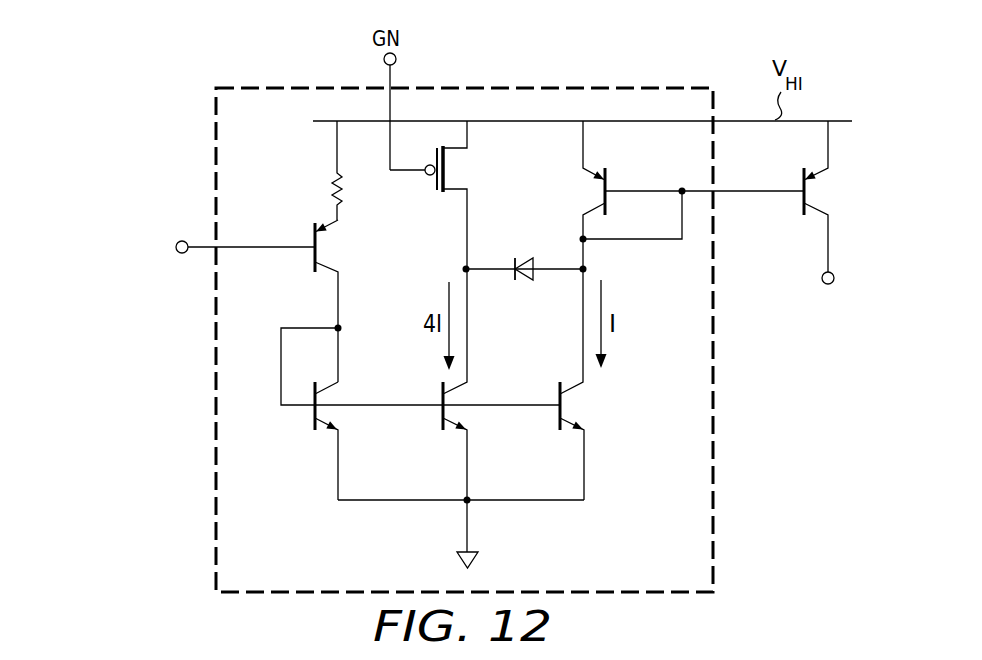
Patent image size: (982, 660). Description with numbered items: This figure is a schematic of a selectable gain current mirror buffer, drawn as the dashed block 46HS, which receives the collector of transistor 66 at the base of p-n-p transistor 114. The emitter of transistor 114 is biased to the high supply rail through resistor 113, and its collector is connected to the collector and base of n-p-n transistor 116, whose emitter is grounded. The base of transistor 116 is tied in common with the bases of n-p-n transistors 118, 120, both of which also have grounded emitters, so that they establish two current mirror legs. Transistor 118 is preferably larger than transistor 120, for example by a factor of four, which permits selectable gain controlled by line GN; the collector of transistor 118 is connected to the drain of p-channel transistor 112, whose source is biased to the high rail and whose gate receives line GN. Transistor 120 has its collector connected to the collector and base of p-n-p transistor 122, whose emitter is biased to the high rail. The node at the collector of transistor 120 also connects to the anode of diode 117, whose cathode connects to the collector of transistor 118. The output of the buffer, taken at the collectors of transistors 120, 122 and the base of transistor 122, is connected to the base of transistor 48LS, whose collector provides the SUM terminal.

The p-channel transistor 112 is at (434, 186).
The resistor 113 is at (332, 190).
The p-n-p transistor 114 is at (313, 268).
The n-p-n transistor 116 is at (313, 425).
The diode 117 is at (517, 256).
The n-p-n transistor 118 is at (438, 423).
The n-p-n transistor 120 is at (555, 423).
The p-n-p transistor 122 is at (612, 181).
The transistor 48LS is at (800, 172).
The selectable gain current mirror buffer 46HS is at (714, 541).
The transistor 66 is at (170, 259).